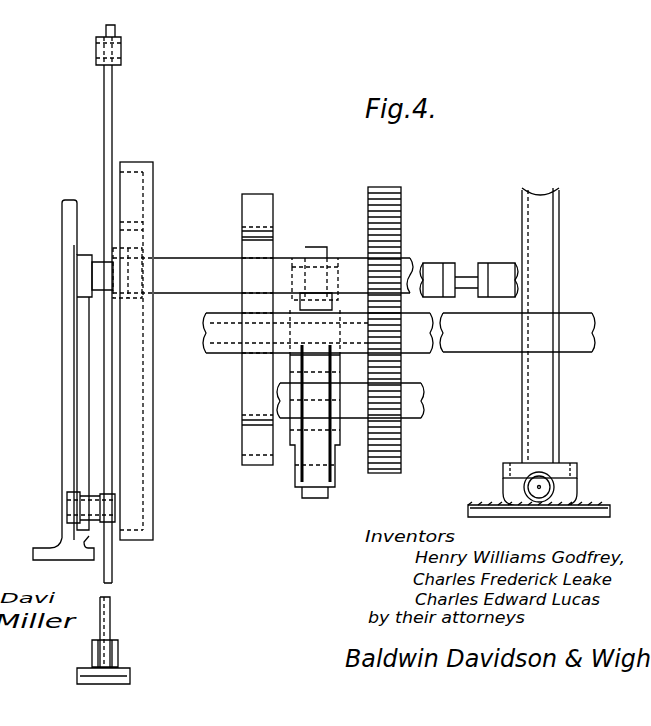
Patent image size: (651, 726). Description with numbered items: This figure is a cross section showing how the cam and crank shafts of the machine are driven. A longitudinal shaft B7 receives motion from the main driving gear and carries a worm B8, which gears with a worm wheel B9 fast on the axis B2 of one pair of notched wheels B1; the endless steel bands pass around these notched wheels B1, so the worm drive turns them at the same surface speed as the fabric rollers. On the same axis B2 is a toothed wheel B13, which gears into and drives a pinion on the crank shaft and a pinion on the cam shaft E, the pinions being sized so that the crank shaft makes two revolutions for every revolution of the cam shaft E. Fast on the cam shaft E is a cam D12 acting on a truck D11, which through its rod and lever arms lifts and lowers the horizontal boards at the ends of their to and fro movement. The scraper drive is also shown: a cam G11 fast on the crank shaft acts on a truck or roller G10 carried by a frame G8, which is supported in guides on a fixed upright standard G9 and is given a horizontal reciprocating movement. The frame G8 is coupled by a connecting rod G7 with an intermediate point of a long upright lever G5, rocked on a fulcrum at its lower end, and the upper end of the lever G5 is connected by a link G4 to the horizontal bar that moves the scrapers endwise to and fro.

The link G4 is at (115, 40).
The upright lever G5 is at (120, 80).
The connecting rod G7 is at (97, 497).
The frame G8 is at (85, 383).
The upright standard G9 is at (62, 366).
The truck G10 is at (108, 250).
The cam G11 is at (157, 156).
The notched wheel B1 is at (258, 197).
The axis B2 is at (594, 311).
The longitudinal shaft B7 is at (541, 491).
The worm B8 is at (555, 480).
The worm wheel B9 is at (558, 442).
The toothed wheel B13 is at (380, 470).
The truck D11 is at (318, 482).
The cam D12 is at (333, 360).
The cam shaft E is at (350, 400).